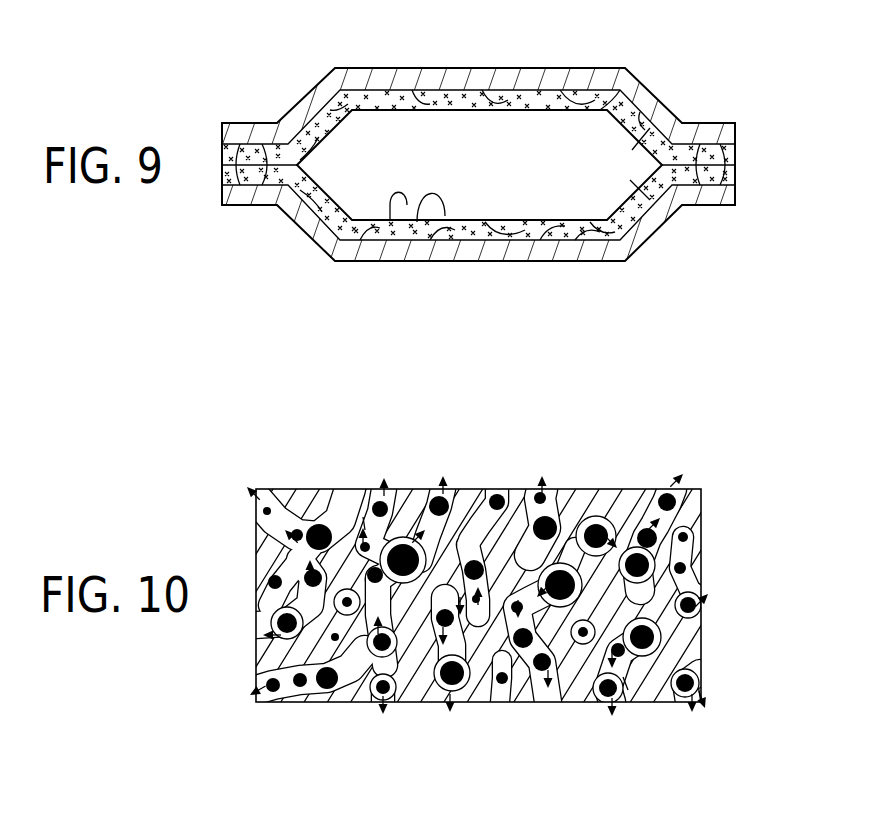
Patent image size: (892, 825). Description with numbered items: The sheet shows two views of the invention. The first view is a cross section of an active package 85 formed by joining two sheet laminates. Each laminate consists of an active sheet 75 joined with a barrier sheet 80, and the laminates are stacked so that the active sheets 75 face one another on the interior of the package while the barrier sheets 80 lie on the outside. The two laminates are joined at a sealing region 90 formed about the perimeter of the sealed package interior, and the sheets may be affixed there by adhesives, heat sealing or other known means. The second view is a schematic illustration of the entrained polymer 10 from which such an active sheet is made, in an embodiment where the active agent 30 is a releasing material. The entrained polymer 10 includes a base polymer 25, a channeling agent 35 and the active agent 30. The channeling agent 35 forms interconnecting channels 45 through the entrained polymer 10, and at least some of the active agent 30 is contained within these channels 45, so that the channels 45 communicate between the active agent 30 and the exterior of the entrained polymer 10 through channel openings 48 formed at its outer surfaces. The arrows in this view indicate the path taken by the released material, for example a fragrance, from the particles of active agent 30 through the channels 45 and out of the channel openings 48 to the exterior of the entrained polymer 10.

In FIG. 10, the entrained polymer 10 is at (704, 526).
In FIG. 9, the base polymer 25 is at (431, 222).
In FIG. 10, the base polymer 25 is at (687, 645).
In FIG. 9, the active agent 30 is at (293, 198).
In FIG. 10, the active agent 30 is at (498, 494).
In FIG. 9, the channeling agent 35 is at (303, 195).
In FIG. 10, the channeling agent 35 is at (653, 489).
In FIG. 9, the channels 45 is at (604, 222).
In FIG. 10, the channels 45 is at (363, 517).
In FIG. 9, the channel openings 48 is at (407, 205).
In FIG. 10, the channel openings 48 is at (252, 488).
In FIG. 9, the active sheet 75 is at (510, 95).
In FIG. 9, the barrier sheet 80 is at (583, 72).
In FIG. 9, the active package 85 is at (690, 118).
In FIG. 9, the sealing region 90 is at (222, 165).